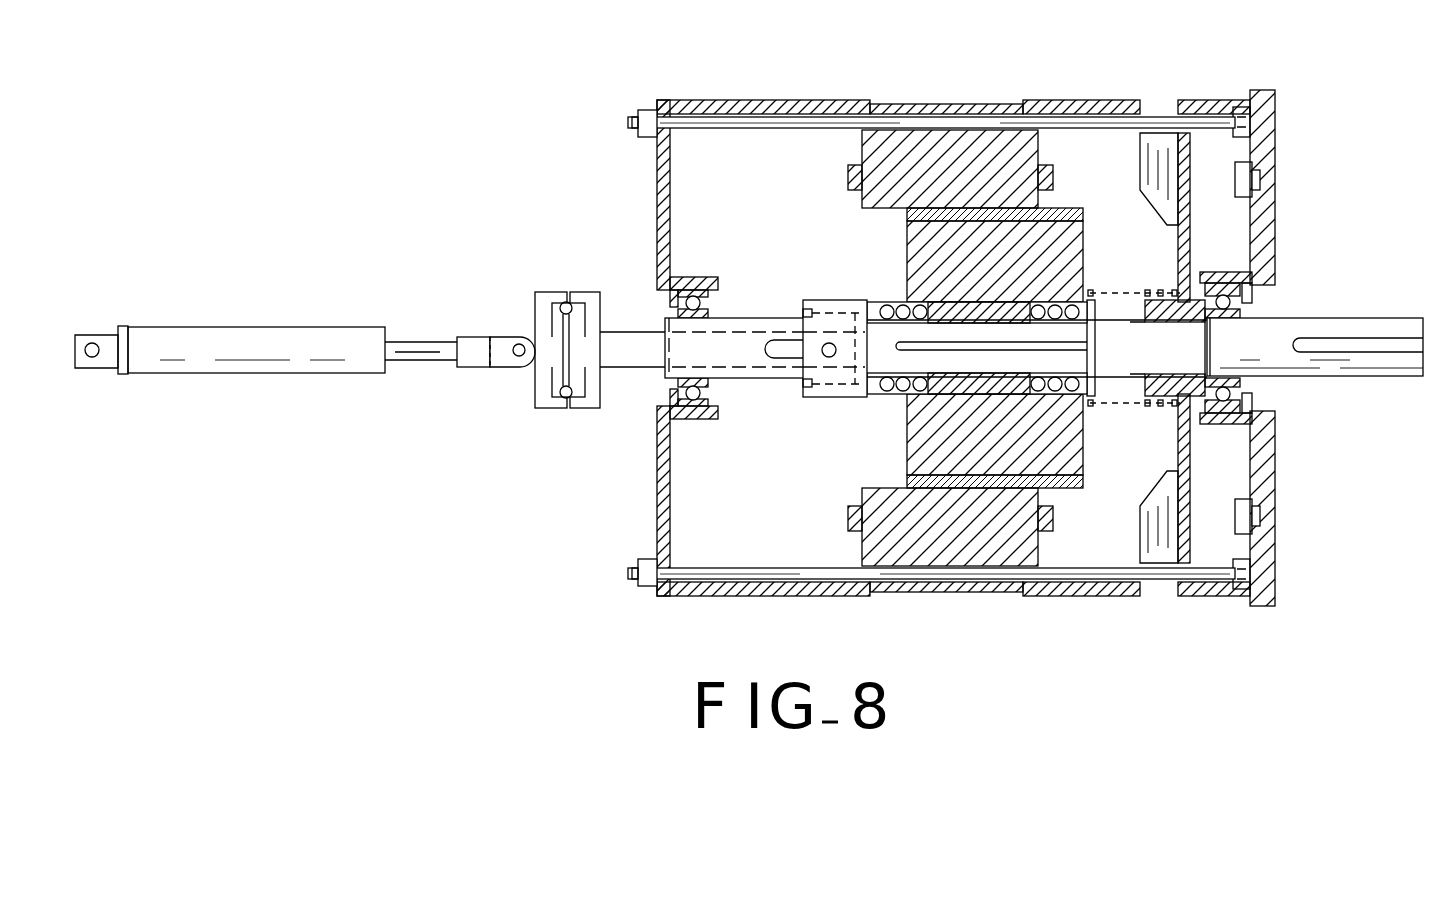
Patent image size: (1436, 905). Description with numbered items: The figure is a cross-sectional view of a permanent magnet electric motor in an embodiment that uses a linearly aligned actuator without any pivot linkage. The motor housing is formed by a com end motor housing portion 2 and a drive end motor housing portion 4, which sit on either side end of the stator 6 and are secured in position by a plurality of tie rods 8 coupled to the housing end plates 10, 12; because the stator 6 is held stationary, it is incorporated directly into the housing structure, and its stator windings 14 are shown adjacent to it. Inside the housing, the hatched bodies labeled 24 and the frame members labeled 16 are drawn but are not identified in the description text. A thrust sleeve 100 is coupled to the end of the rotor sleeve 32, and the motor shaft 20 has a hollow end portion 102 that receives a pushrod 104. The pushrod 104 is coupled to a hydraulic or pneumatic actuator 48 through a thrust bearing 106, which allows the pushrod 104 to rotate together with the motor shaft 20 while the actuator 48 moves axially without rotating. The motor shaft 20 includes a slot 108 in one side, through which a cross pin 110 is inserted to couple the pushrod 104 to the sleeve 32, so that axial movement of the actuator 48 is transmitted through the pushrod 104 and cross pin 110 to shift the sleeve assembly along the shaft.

The com end motor housing portion 2 is at (774, 100).
The drive end motor housing portion 4 is at (1108, 100).
The stator 6 is at (962, 184).
The tie rods 8 is at (630, 120).
The housing end plate 10 is at (657, 200).
The housing end plate 12 is at (1275, 200).
The stator windings 14 is at (848, 180).
The support frame 16 is at (1083, 212).
The motor shaft 20 is at (1340, 325).
The rotor 24 is at (1012, 266).
The rotor sleeve 32 is at (897, 304).
The hydraulic or pneumatic actuator 48 is at (280, 330).
The thrust sleeve 100 is at (833, 300).
The hollow end portion 102 is at (750, 378).
The pushrod 104 is at (635, 360).
The thrust bearing 106 is at (574, 273).
The slot 108 is at (785, 345).
The cross pin 110 is at (830, 357).